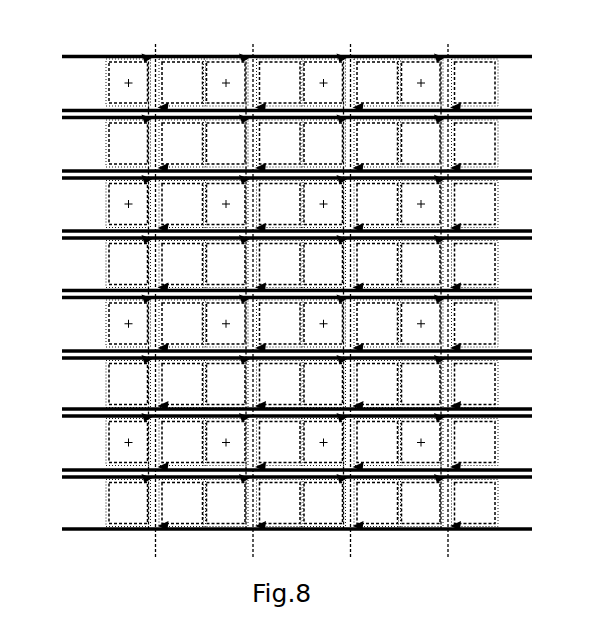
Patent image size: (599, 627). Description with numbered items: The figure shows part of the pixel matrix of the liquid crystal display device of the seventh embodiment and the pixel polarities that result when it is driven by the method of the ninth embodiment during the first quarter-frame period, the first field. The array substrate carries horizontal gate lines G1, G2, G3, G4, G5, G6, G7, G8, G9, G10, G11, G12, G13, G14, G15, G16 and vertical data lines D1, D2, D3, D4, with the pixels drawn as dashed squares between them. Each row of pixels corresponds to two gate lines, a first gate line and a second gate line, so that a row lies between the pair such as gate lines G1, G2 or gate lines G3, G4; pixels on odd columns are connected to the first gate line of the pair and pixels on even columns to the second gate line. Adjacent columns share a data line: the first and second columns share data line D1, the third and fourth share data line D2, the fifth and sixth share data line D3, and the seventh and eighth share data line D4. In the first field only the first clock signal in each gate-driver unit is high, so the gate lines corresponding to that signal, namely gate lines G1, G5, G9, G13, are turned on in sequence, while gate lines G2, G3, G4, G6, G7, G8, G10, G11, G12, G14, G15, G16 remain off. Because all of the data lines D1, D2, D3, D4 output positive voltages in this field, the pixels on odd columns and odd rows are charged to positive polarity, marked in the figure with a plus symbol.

The gate line G1 is at (287, 56).
The gate line G2 is at (287, 108).
The gate line G3 is at (287, 117).
The gate line G4 is at (287, 169).
The gate line G5 is at (287, 178).
The gate line G6 is at (287, 229).
The gate line G7 is at (287, 238).
The gate line G8 is at (287, 288).
The gate line G9 is at (287, 297).
The gate line G10 is at (286, 349).
The gate line G11 is at (286, 358).
The gate line G12 is at (286, 407).
The gate line G13 is at (286, 416).
The gate line G14 is at (286, 468).
The gate line G15 is at (286, 477).
The gate line G16 is at (286, 529).
The data line D1 is at (155, 295).
The data line D2 is at (253, 295).
The data line D3 is at (350, 295).
The data line D4 is at (448, 295).